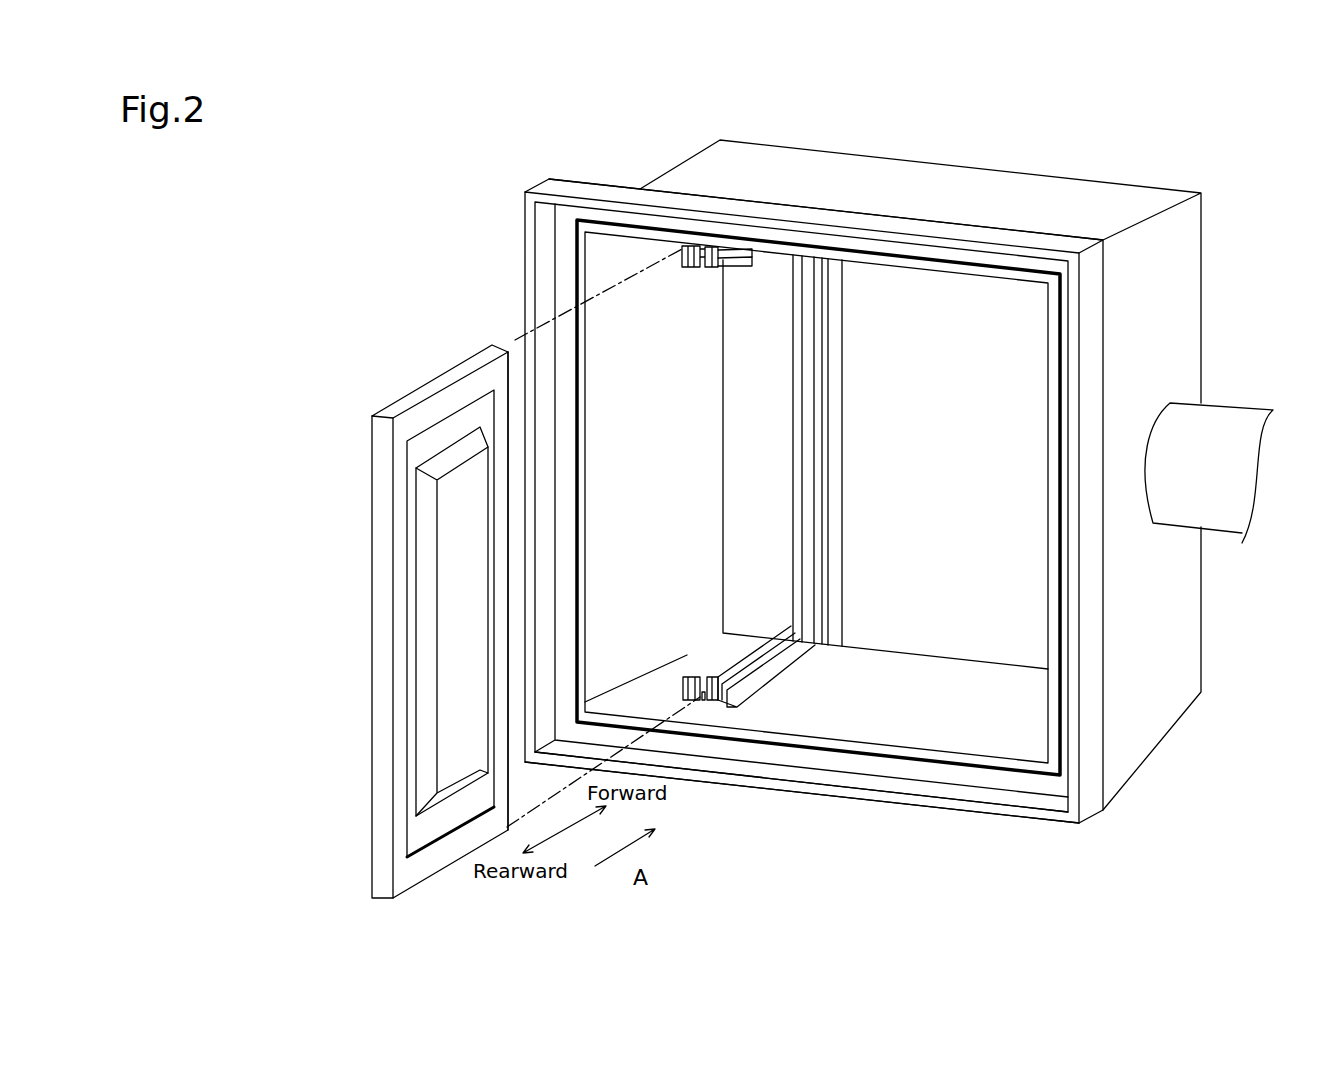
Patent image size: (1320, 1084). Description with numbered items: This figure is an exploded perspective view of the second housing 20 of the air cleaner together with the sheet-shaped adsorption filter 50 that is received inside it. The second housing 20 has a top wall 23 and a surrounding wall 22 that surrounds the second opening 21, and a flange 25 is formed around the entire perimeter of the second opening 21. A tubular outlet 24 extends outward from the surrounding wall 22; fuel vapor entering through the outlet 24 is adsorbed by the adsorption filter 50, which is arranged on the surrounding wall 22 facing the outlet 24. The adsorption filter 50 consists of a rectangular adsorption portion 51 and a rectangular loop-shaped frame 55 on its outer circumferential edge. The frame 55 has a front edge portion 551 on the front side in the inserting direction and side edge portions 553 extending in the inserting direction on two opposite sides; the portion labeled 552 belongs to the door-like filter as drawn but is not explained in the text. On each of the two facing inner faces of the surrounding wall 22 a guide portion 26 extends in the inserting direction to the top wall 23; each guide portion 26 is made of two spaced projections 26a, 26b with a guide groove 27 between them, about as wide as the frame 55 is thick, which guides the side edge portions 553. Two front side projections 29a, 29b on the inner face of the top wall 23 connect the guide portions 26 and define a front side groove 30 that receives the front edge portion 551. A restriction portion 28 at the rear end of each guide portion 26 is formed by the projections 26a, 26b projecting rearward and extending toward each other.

The second housing 20 is at (647, 137).
The second opening 21 is at (583, 538).
The surrounding wall 22 is at (1175, 608).
The top wall 23 is at (930, 632).
The outlet 24 is at (1215, 425).
The flange 25 is at (872, 762).
The guide portion 26 is at (733, 262).
The projection 26a is at (712, 253).
The projection 26b is at (693, 250).
The guide groove 27 is at (705, 250).
The restriction portion 28 is at (712, 268).
The front side projection 29a is at (815, 430).
The front side projection 29b is at (790, 432).
The front side groove 30 is at (800, 503).
The adsorption filter 50 is at (318, 612).
The adsorption portion 51 is at (425, 612).
The frame 55 is at (380, 655).
The front edge portion 551 is at (500, 632).
The door side face 552 is at (372, 775).
The side edge portion 553 is at (418, 382).